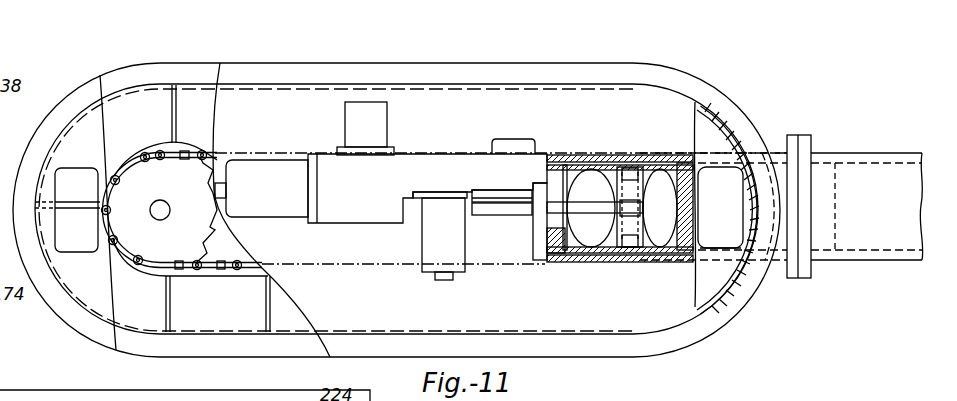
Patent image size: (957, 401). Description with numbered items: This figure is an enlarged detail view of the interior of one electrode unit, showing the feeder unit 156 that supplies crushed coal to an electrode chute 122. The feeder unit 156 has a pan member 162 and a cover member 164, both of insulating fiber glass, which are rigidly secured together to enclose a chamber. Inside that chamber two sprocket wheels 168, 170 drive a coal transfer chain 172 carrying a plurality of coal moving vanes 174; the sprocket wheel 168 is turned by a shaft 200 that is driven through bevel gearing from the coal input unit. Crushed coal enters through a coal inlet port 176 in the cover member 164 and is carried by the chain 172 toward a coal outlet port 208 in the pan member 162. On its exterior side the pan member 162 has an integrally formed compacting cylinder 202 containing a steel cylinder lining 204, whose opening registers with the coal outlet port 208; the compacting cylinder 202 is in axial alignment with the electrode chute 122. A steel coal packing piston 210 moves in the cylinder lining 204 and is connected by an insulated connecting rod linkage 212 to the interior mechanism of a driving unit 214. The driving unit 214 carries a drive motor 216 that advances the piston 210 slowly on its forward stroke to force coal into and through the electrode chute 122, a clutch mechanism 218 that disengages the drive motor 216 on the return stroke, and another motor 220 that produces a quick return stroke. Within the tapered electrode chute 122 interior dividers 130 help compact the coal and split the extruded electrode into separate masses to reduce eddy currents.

The electrode chute 122 is at (880, 153).
The divider 130 is at (836, 163).
The feeder unit 156 is at (507, 63).
The pan member 162 is at (147, 93).
The cover member 164 is at (581, 321).
The sprocket wheel 168 is at (220, 230).
The sprocket wheel 170 is at (625, 155).
The coal transfer chain 172 is at (230, 268).
The coal moving vane 174 is at (167, 318).
The coal inlet port 176 is at (77, 175).
The shaft 200 is at (168, 194).
The compacting cylinder 202 is at (567, 262).
The cylinder lining 204 is at (620, 252).
The coal outlet port 208 is at (718, 246).
The coal packing piston 210 is at (690, 198).
The insulated connecting rod linkage 212 is at (498, 210).
The driving unit 214 is at (450, 160).
The drive motor 216 is at (458, 267).
The clutch mechanism 218 is at (388, 118).
The motor 220 is at (278, 162).